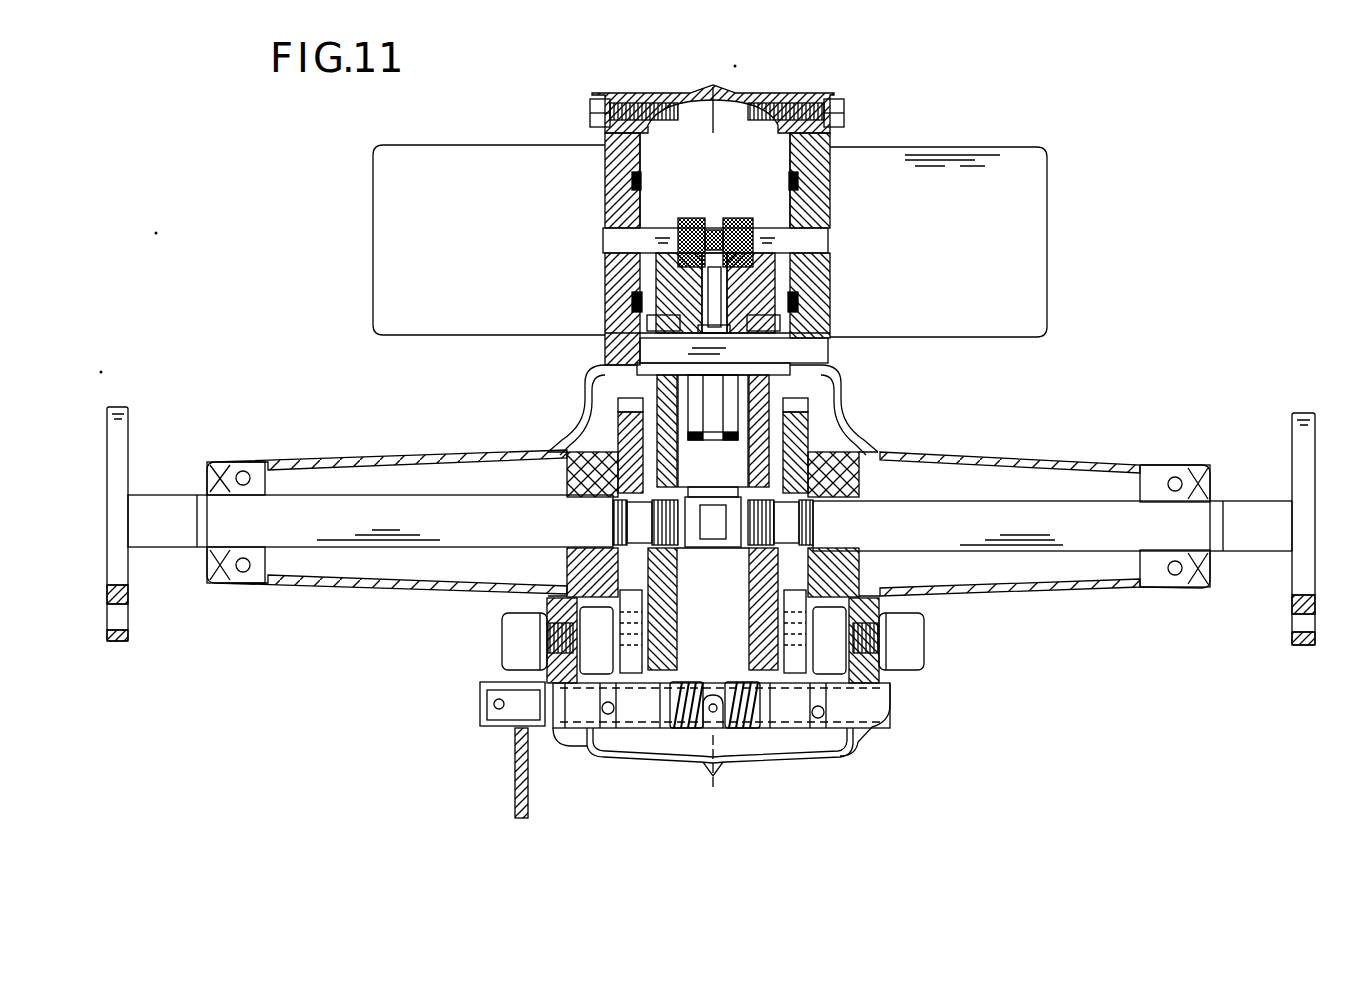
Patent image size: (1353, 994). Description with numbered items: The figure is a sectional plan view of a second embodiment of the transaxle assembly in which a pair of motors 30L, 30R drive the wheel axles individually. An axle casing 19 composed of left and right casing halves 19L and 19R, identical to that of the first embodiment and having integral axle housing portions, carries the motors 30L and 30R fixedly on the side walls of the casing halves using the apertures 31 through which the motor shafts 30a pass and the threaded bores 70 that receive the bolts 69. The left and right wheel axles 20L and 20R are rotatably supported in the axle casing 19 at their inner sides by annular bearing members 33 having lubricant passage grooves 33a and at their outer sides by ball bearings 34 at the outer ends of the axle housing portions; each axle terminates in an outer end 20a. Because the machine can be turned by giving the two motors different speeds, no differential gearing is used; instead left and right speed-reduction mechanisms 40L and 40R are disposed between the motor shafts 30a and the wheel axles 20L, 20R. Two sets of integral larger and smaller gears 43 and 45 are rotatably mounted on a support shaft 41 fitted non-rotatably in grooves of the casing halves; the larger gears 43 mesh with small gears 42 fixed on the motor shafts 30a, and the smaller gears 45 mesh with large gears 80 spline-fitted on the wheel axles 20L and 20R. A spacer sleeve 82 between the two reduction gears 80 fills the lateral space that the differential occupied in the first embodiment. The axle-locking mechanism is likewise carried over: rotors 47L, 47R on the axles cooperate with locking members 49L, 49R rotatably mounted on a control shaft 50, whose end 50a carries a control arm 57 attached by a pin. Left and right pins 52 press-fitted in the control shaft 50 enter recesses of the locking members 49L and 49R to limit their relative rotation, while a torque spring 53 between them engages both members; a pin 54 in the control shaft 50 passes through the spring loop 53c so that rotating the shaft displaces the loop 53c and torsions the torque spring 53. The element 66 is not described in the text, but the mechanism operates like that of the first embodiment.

The threaded bores 70 is at (632, 133).
The bolts 69 is at (595, 112).
The motor shafts 30a is at (658, 230).
The left motor 30L is at (402, 220).
The right motor 30R is at (1028, 255).
The larger gears 43 is at (650, 243).
The small gears 42 is at (705, 223).
The apertures 31 is at (660, 290).
The support shaft 41 is at (790, 332).
The smaller gears 45 is at (630, 300).
The left speed-reduction mechanism 40L is at (642, 383).
The right speed-reduction mechanism 40R is at (798, 383).
The left rotor 47L is at (575, 477).
The right rotor 47R is at (848, 398).
The left casing half 19L is at (588, 400).
The right casing half 19R is at (862, 406).
The large gears 80 is at (860, 552).
The annular bearing members 33 is at (897, 482).
The lubricant passage grooves 33a is at (862, 443).
The ball bearings 34 is at (1175, 478).
The wheel flange 20a is at (122, 410).
The left wheel axle 20L is at (355, 520).
The right wheel axle 20R is at (1082, 525).
The left locking member 49L is at (600, 578).
The right locking member 49R is at (803, 655).
The spacer sleeve 82 is at (708, 549).
The axle casing 19 is at (866, 746).
The bolt 66 is at (523, 633).
The control shaft 50 is at (848, 742).
The pins 52 is at (830, 712).
The end of control shaft 50a is at (528, 703).
The control arm 57 is at (515, 758).
The pin 54 is at (712, 702).
The torque spring 53 is at (735, 725).
The loop 53c is at (715, 777).